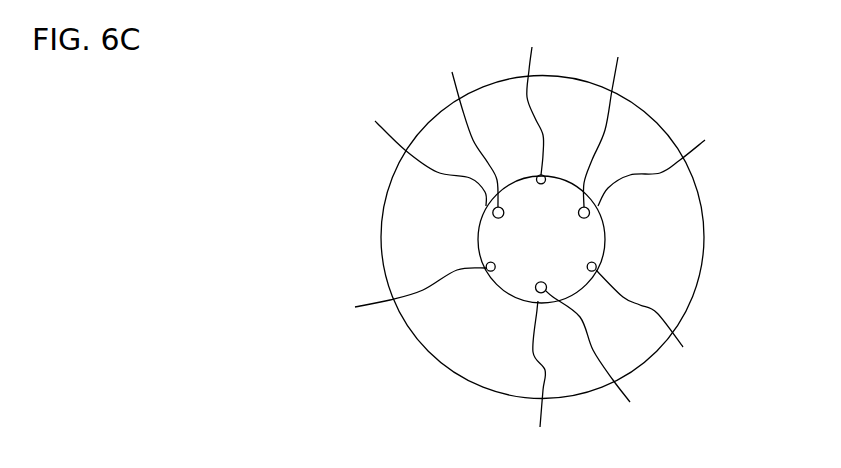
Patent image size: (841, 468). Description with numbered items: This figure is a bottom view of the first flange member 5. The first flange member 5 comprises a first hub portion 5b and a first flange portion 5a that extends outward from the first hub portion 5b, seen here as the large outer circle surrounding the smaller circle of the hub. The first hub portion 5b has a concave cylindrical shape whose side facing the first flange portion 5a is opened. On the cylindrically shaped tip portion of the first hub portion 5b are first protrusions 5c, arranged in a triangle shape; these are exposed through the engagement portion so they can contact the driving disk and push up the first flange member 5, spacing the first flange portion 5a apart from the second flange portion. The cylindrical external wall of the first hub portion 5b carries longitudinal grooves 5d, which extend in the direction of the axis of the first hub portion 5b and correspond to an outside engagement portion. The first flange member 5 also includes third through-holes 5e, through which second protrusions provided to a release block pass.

The first flange member 5 is at (752, 427).
The first flange portion 5a is at (688, 212).
The first hub portion 5b is at (478, 244).
The first protrusions 5c is at (522, 195).
The longitudinal grooves 5d is at (551, 272).
The third through-holes 5e is at (550, 225).